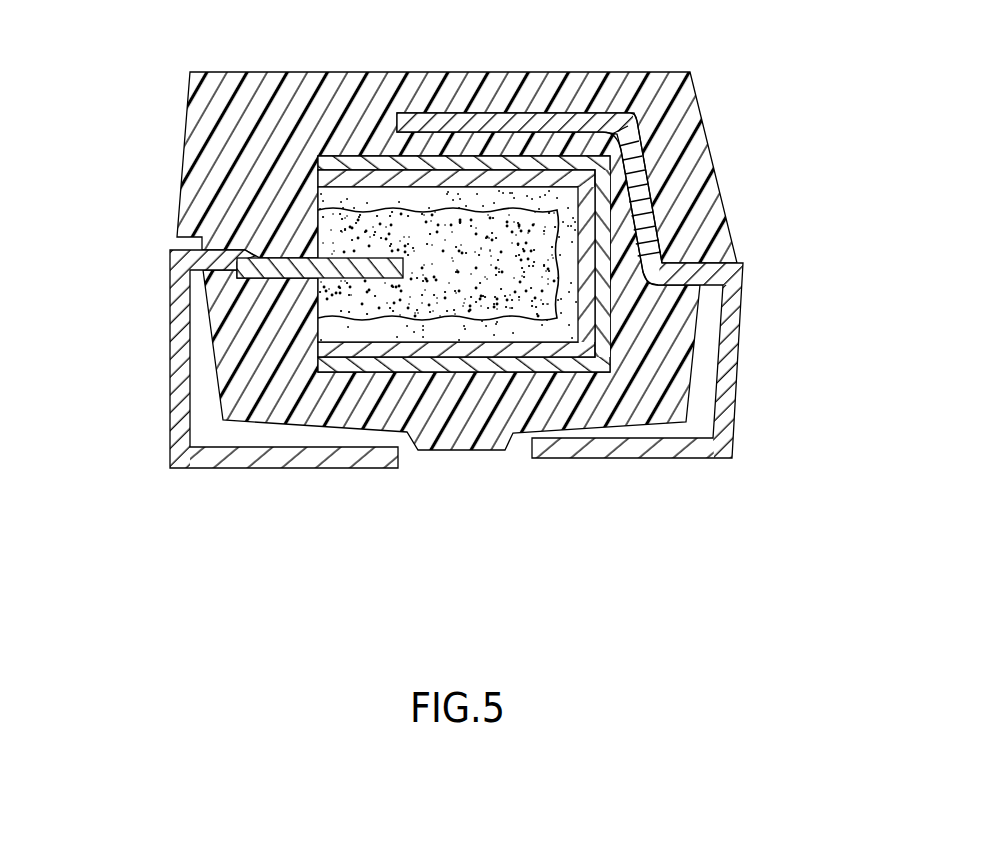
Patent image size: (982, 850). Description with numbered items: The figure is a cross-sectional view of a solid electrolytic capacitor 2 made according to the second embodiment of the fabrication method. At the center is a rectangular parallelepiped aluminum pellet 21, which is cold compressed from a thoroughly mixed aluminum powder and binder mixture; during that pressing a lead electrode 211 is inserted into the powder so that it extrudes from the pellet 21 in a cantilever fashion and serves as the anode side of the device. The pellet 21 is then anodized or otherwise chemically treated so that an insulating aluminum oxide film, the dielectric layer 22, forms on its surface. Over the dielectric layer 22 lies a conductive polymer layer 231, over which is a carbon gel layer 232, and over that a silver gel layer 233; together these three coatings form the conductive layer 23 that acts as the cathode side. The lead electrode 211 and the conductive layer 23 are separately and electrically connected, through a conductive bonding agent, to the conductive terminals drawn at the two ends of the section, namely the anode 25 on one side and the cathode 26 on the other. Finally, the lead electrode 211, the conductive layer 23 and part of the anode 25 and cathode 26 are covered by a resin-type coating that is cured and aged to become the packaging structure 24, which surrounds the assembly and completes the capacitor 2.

The solid electrolytic capacitor 2 is at (453, 294).
The aluminum pellet 21 is at (440, 290).
The lead electrode 211 is at (288, 268).
The dielectric layer 22 is at (372, 318).
The conductive layer 23 is at (493, 370).
The conductive polymer layer 231 is at (468, 327).
The carbon gel layer 232 is at (537, 348).
The silver gel layer 233 is at (600, 320).
The packaging structure 24 is at (567, 88).
The anode 25 is at (188, 375).
The cathode 26 is at (725, 380).